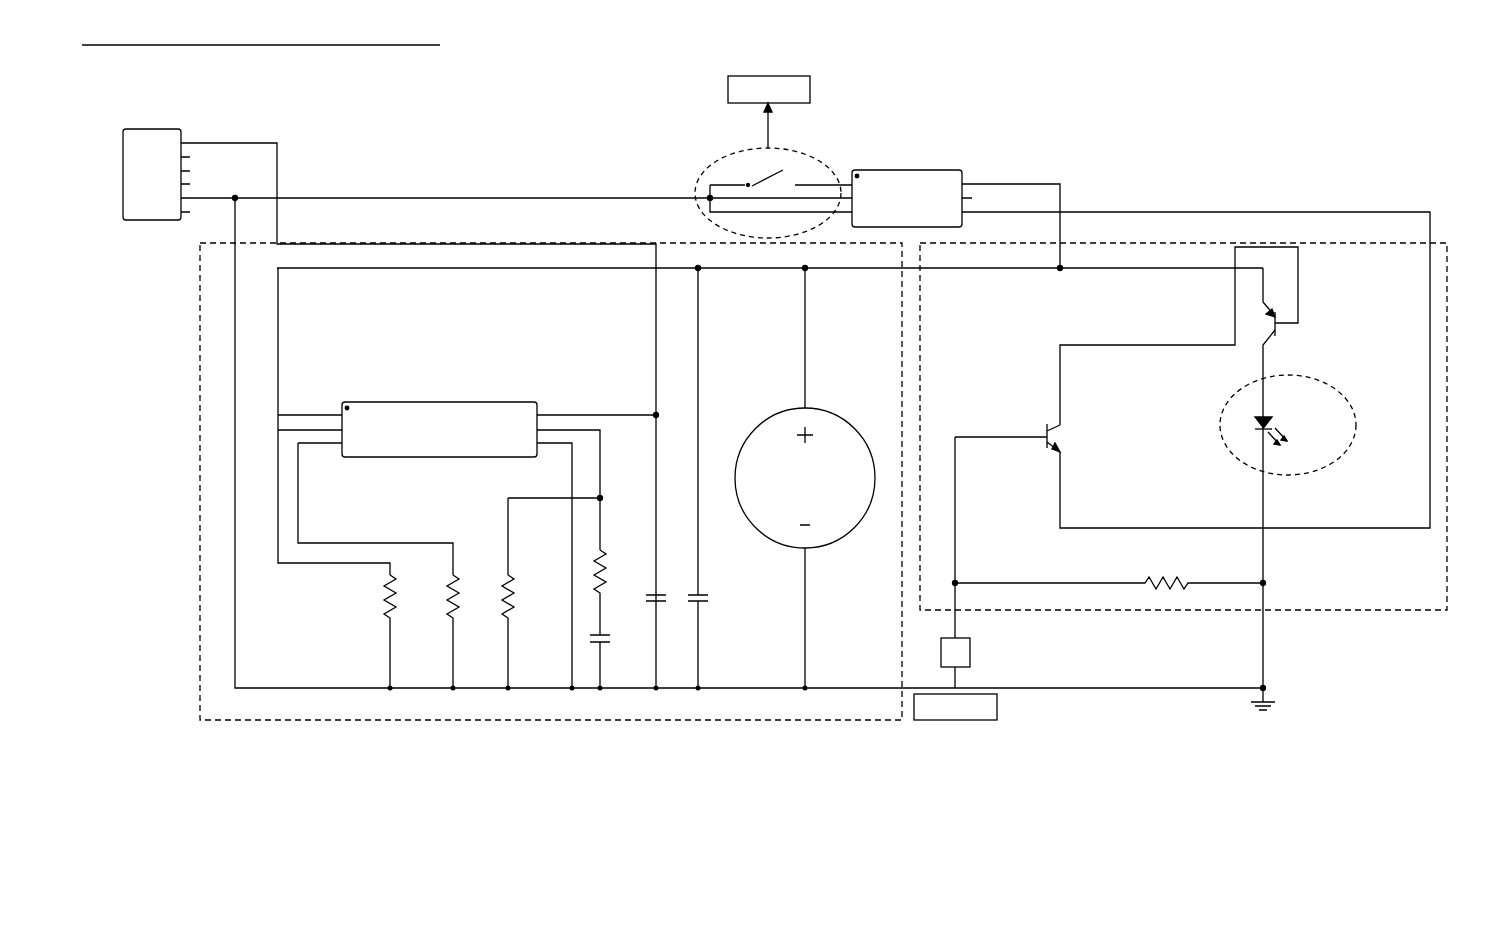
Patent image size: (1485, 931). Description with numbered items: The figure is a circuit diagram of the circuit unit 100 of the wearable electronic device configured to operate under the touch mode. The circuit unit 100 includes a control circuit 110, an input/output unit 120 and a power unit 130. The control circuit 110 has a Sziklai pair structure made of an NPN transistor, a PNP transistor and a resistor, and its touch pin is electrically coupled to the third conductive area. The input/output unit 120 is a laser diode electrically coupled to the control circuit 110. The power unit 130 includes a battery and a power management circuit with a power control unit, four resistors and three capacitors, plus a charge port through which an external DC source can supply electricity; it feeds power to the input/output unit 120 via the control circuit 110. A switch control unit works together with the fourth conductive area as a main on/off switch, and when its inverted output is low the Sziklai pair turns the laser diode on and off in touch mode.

The circuit unit 100 is at (768, 413).
The control circuit 110 is at (1183, 465).
The input/output unit 120 is at (1320, 379).
The power unit 130 is at (537, 241).